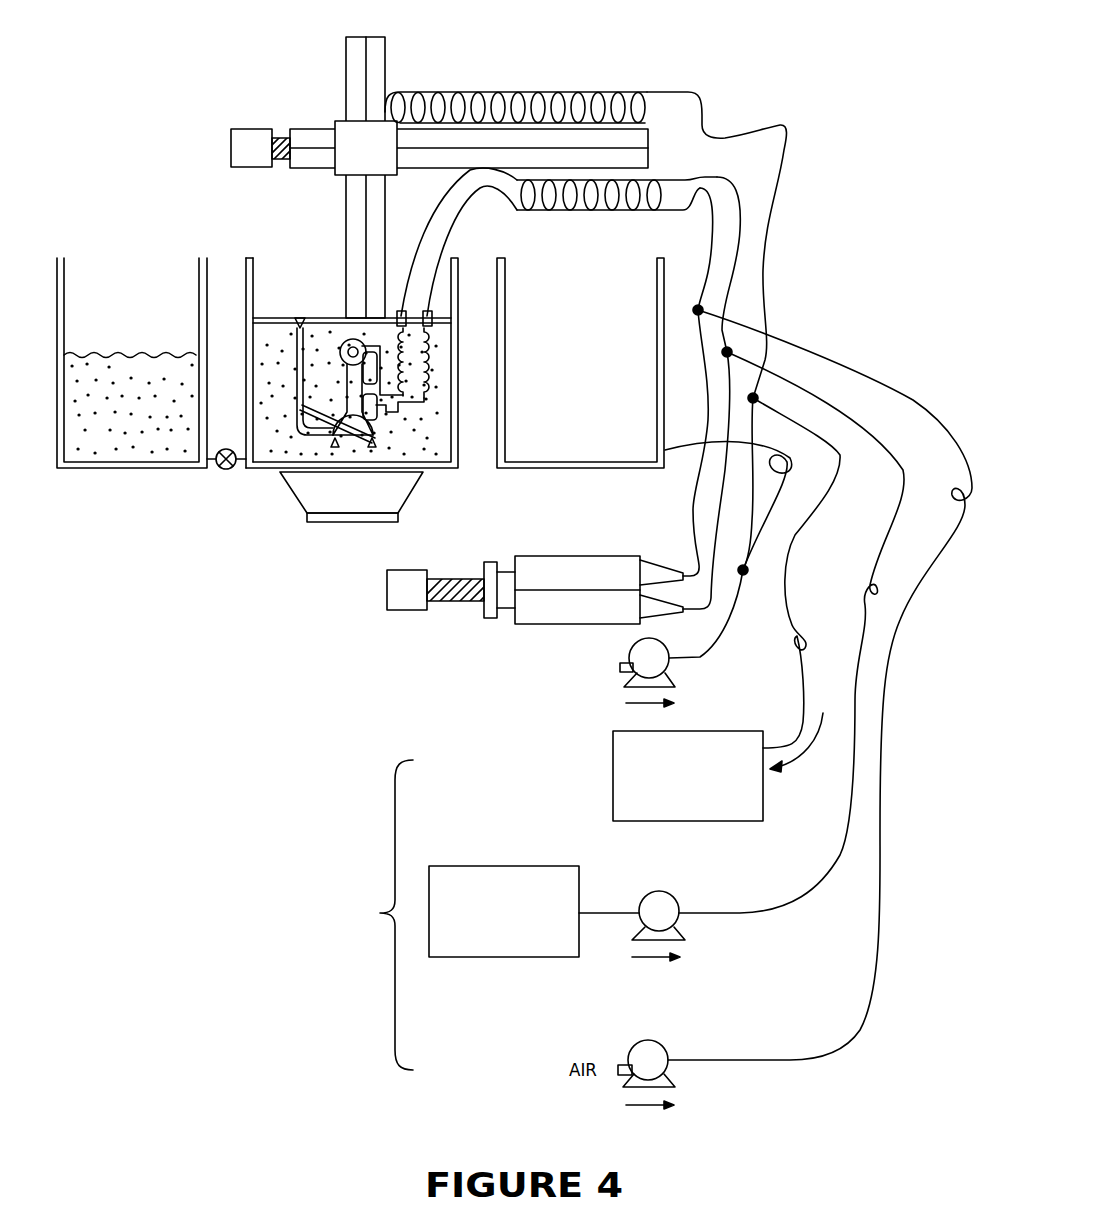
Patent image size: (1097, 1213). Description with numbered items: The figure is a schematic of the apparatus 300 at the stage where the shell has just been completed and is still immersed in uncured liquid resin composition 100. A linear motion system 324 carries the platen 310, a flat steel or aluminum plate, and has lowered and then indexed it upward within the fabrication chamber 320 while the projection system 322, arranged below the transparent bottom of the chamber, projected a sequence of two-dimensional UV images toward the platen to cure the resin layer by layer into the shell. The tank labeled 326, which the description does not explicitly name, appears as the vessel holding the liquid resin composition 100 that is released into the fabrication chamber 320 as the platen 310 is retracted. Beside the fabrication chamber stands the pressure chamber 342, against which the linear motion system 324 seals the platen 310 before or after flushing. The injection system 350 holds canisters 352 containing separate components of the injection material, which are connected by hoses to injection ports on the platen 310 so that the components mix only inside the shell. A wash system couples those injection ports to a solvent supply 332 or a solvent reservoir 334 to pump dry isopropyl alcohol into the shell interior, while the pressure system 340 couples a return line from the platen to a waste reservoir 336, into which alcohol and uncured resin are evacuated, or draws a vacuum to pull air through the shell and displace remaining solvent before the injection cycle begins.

The liquid resin composition 100 is at (128, 443).
The apparatus 300 is at (879, 69).
The platen 310 is at (277, 318).
The fabrication chamber 320 is at (246, 270).
The projection system 322 is at (313, 493).
The linear motion system 324 is at (300, 128).
The rinse tank 326 is at (168, 469).
The solvent supply 332 is at (557, 913).
The solvent reservoir 334 is at (557, 913).
The waste reservoir 336 is at (688, 776).
The pressure system 340 is at (565, 645).
The pressure chamber 342 is at (630, 309).
The injection system 350 is at (380, 568).
The canisters 352 is at (617, 570).